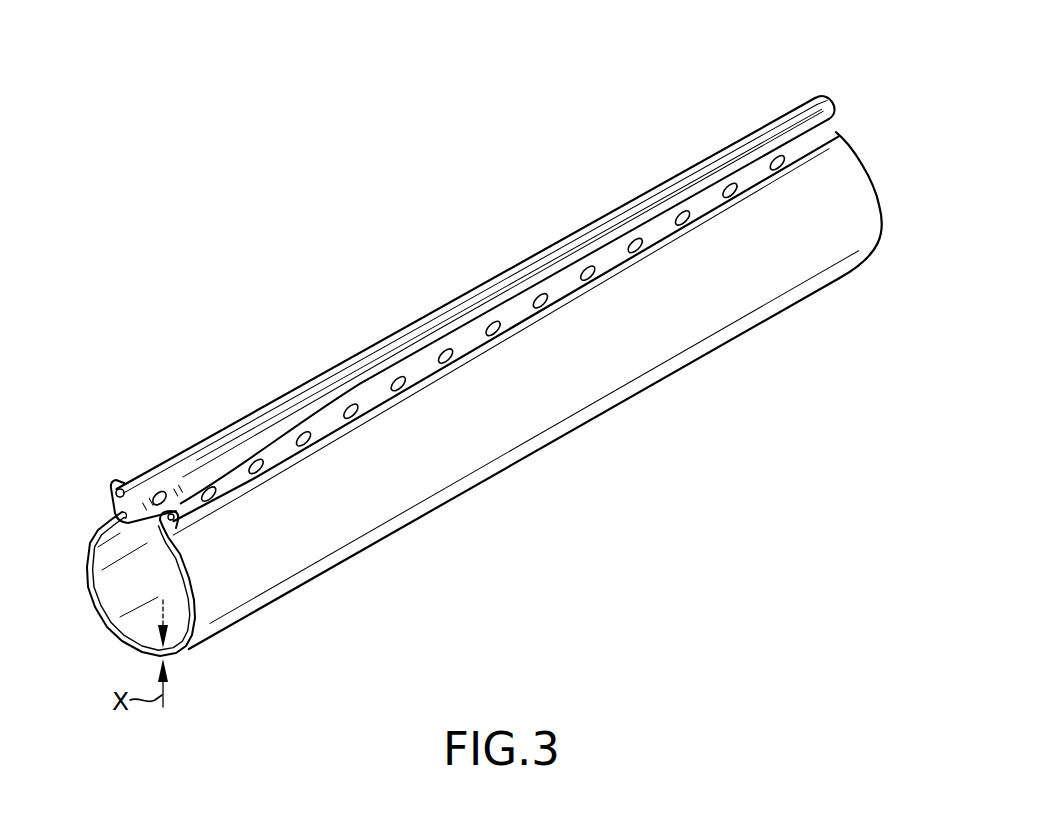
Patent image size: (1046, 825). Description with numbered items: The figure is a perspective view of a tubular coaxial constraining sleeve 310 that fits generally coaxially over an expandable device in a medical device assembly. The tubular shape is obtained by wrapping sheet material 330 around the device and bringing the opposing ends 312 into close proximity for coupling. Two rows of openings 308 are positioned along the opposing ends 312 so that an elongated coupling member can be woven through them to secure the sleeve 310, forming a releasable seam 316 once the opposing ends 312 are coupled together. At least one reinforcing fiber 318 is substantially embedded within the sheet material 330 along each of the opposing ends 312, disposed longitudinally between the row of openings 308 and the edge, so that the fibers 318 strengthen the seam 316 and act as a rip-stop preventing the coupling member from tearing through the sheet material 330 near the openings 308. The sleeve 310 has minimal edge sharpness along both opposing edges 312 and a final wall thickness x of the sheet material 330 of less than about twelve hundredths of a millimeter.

The openings 308 is at (305, 440).
The constraining sleeve 310 is at (464, 257).
The opposing ends 312 is at (800, 99).
The releasable seam 316 is at (718, 165).
The reinforcing fiber 318 is at (119, 489).
The sheet material 330 is at (107, 607).